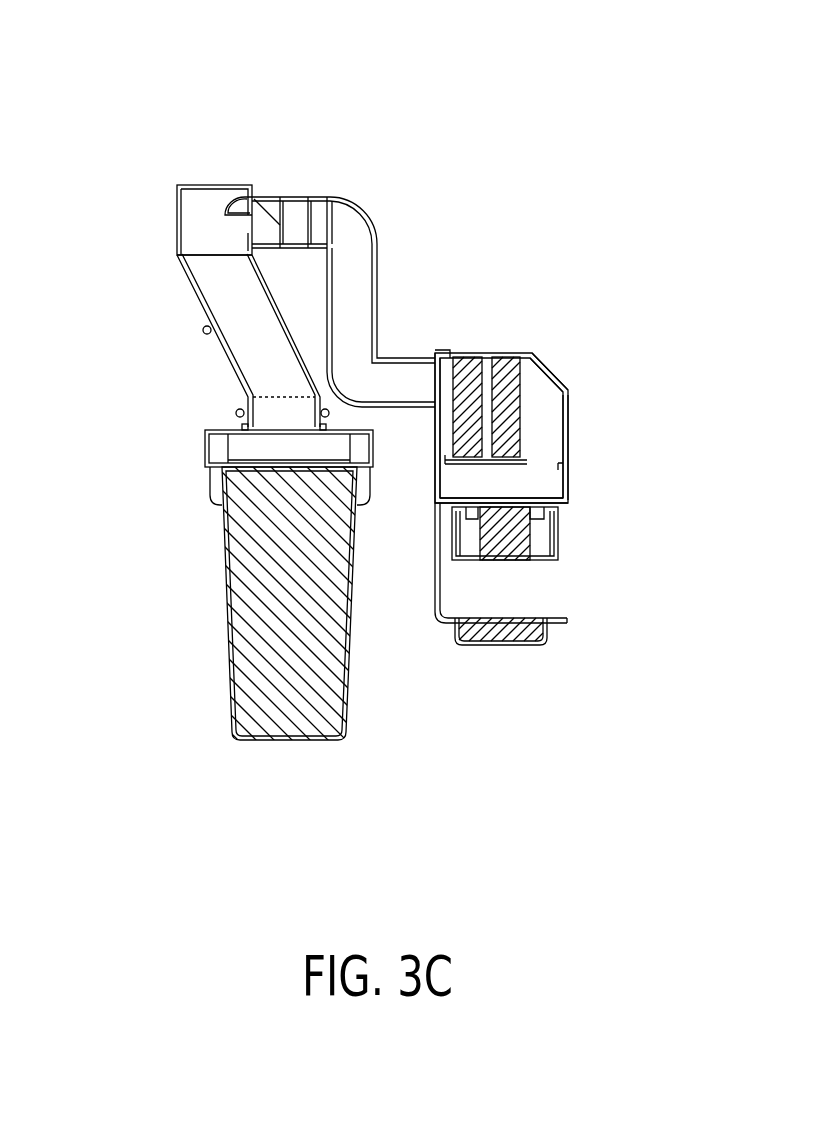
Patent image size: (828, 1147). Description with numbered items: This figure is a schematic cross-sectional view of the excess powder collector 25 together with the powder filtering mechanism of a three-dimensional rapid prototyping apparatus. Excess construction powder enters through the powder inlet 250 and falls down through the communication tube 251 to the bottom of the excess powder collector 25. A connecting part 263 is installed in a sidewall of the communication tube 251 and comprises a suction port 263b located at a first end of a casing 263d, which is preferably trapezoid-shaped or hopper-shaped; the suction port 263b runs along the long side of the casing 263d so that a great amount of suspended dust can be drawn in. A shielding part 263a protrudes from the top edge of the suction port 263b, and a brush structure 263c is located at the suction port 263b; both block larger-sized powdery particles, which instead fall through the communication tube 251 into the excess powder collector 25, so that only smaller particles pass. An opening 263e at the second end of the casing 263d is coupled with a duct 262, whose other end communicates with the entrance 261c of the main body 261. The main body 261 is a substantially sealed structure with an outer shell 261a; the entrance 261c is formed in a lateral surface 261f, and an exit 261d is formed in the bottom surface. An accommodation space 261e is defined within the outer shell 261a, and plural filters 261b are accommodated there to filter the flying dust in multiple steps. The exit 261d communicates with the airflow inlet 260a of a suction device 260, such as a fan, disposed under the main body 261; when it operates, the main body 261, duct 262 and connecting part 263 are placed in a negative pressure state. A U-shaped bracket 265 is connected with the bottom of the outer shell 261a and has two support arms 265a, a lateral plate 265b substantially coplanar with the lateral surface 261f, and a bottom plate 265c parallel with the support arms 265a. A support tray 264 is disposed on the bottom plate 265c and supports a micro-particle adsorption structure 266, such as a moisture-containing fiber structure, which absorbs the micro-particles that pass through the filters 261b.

The excess powder collector 25 is at (205, 592).
The powder inlet 250 is at (203, 185).
The communication tube 251 is at (228, 297).
The suction device 260 is at (562, 553).
The airflow inlet 260a is at (553, 511).
The main body 261 is at (536, 394).
The outer shell 261a is at (568, 425).
The filters 261b is at (467, 358).
The entrance 261c is at (437, 383).
The exit 261d is at (507, 503).
The accommodation space 261e is at (546, 410).
The lateral surface 261f is at (432, 450).
The duct 262 is at (380, 252).
The connecting part 263 is at (251, 125).
The shielding part 263a is at (240, 210).
The suction port 263b is at (180, 205).
The brush structure 263c is at (375, 215).
The casing 263d is at (283, 210).
The opening 263e is at (315, 212).
The support tray 264 is at (540, 622).
The bracket 265 is at (433, 633).
The support arms 265a is at (450, 512).
The lateral plate 265b is at (437, 592).
The bottom plate 265c is at (476, 659).
The micro-particle adsorption structure 266 is at (532, 632).